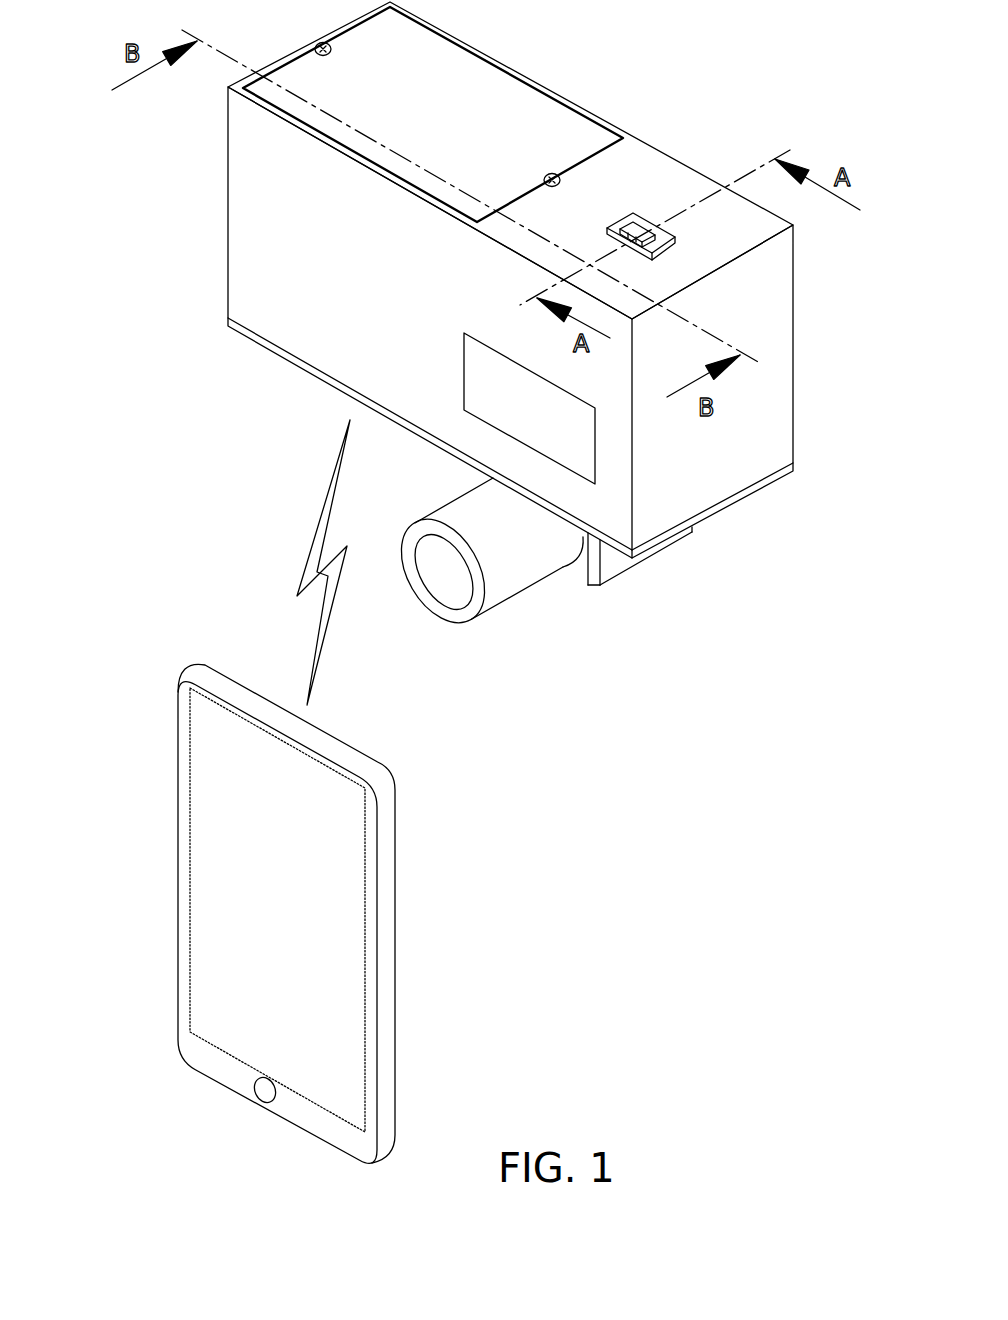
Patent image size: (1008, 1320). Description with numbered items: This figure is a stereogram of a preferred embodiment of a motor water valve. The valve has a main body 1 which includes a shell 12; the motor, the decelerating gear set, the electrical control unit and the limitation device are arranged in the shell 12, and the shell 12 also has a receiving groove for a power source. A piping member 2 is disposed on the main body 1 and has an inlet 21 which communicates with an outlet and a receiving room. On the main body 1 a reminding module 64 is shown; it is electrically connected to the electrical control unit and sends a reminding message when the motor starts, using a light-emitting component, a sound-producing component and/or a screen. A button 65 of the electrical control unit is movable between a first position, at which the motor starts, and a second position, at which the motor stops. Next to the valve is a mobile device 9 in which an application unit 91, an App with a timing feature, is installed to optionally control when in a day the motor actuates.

The main body 1 is at (439, 285).
The shell 12 is at (250, 249).
The piping member 2 is at (538, 591).
The inlet 21 is at (458, 590).
The reminding module 64 is at (578, 435).
The button 65 is at (620, 213).
The mobile device 9 is at (342, 913).
The application unit 91 is at (347, 873).